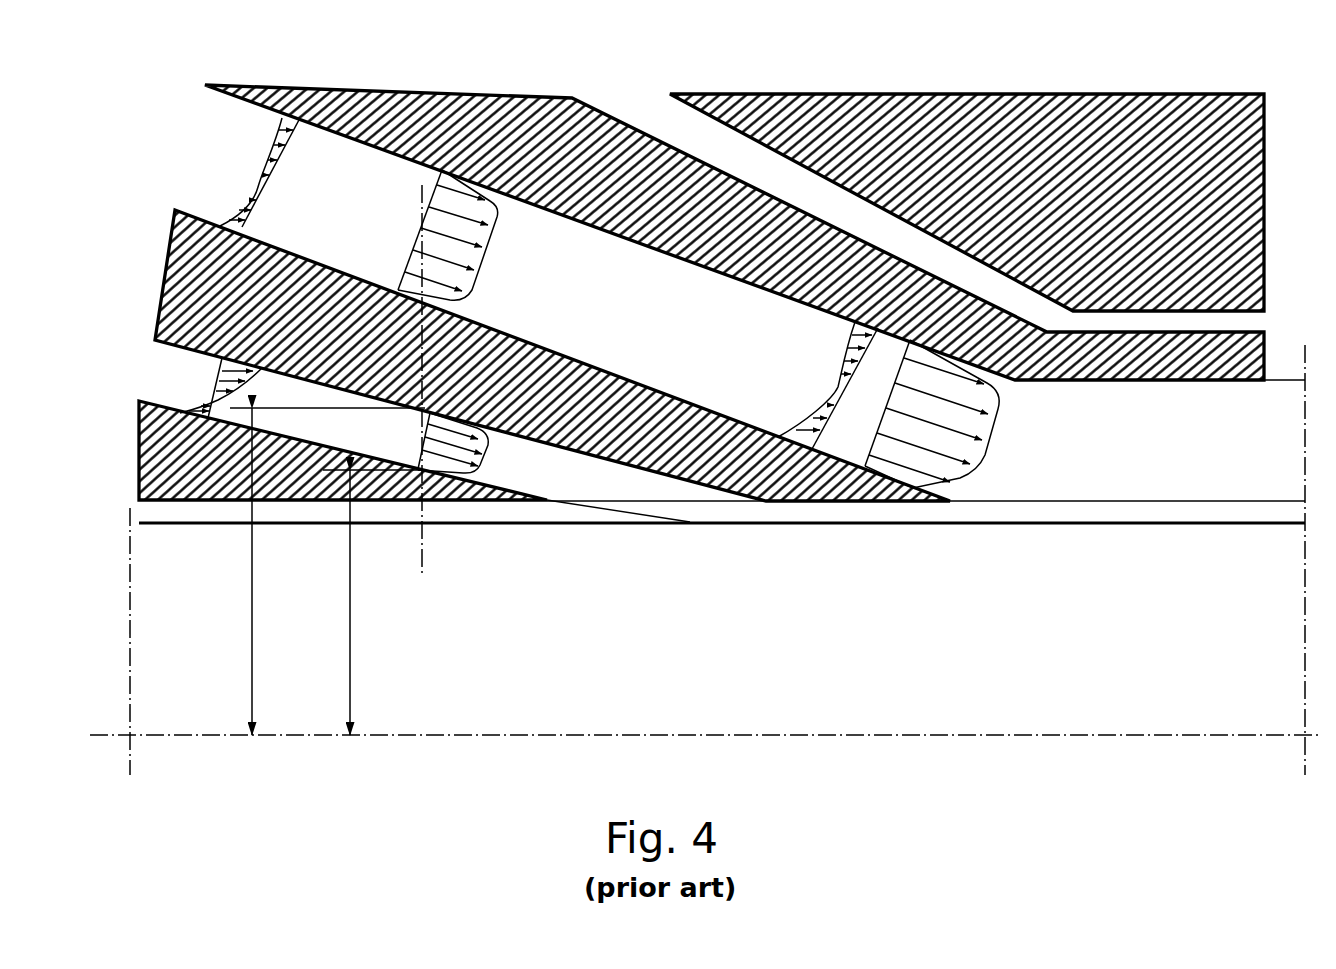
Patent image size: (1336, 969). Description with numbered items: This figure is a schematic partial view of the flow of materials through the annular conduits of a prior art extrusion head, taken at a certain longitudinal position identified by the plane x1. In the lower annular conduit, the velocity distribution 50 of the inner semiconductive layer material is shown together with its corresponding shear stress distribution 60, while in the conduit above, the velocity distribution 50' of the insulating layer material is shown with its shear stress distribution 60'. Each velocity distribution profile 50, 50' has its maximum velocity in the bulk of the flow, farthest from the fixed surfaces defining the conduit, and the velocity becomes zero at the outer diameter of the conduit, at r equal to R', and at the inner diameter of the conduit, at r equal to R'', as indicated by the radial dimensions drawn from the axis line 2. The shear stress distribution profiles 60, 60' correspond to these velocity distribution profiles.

The axis line of the turbomachine 2 is at (933, 523).
The velocity distribution 50 is at (462, 517).
The velocity distribution 50' is at (448, 170).
The shear stress distribution 60 is at (190, 384).
The shear stress distribution 60' is at (220, 153).
The plane x1 is at (423, 566).
The outer diameter of the conduit R' is at (304, 571).
The inner diameter of the conduit R'' is at (359, 602).